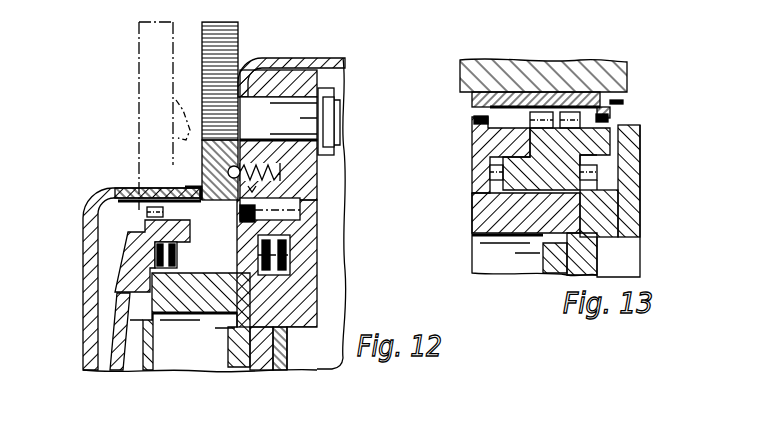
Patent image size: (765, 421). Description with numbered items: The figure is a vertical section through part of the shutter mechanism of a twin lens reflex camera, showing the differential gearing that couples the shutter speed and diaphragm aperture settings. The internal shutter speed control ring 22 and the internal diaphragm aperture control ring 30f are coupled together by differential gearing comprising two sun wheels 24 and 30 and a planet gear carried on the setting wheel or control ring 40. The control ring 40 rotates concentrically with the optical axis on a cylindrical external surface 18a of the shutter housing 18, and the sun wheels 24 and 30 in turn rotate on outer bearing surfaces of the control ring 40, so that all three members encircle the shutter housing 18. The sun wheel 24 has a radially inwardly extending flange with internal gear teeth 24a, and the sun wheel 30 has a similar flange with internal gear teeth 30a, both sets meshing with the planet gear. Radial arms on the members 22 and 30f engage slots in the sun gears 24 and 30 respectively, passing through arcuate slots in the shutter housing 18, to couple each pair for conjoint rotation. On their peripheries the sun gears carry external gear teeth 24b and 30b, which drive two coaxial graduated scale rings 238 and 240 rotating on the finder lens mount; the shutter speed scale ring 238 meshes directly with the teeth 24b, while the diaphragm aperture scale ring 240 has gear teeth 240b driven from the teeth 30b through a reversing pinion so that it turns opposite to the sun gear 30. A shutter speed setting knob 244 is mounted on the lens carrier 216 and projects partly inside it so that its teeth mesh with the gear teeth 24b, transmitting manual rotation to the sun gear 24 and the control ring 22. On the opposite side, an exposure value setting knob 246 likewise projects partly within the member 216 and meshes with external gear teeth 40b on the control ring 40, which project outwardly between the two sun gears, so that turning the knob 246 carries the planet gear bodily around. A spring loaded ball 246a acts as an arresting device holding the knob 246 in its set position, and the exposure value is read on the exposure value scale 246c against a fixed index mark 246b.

In FIG. 12, the shutter speed setting knob 244 is at (142, 38).
In FIG. 12, the exposure value setting knob 246 is at (228, 47).
In FIG. 12, the spring loaded ball 246a is at (240, 168).
In FIG. 12, the fixed index mark 246b is at (187, 188).
In FIG. 12, the exposure value scale 246c is at (200, 160).
In FIG. 12, the lens carrier 216 is at (337, 63).
In FIG. 12, the external gear teeth 40b is at (112, 192).
In FIG. 12, the external gear teeth 24b is at (147, 210).
In FIG. 13, the external gear teeth 24b is at (480, 130).
In FIG. 12, the sun wheel 24 is at (132, 229).
In FIG. 13, the sun wheel 24 is at (500, 150).
In FIG. 12, the internal gear teeth 24a is at (157, 254).
In FIG. 13, the internal gear teeth 24a is at (488, 172).
In FIG. 12, the shutter housing 18 is at (157, 287).
In FIG. 13, the shutter housing 18 is at (482, 213).
In FIG. 12, the internal shutter speed control ring 22 is at (90, 348).
In FIG. 12, the cylindrical external surface 18a is at (187, 278).
In FIG. 13, the cylindrical external surface 18a is at (530, 195).
In FIG. 12, the control ring 40 is at (218, 270).
In FIG. 12, the internal diaphragm aperture control ring 30f is at (282, 366).
In FIG. 12, the external gear teeth 30b is at (252, 206).
In FIG. 13, the external gear teeth 30b is at (570, 117).
In FIG. 12, the sun wheel 30 is at (284, 229).
In FIG. 13, the sun wheel 30 is at (612, 135).
In FIG. 12, the internal gear teeth 30a is at (258, 245).
In FIG. 13, the internal gear teeth 30a is at (597, 172).
In FIG. 13, the shutter speed scale ring 238 is at (480, 100).
In FIG. 13, the diaphragm aperture scale ring 240 is at (604, 109).
In FIG. 13, the gear teeth 240b is at (613, 117).